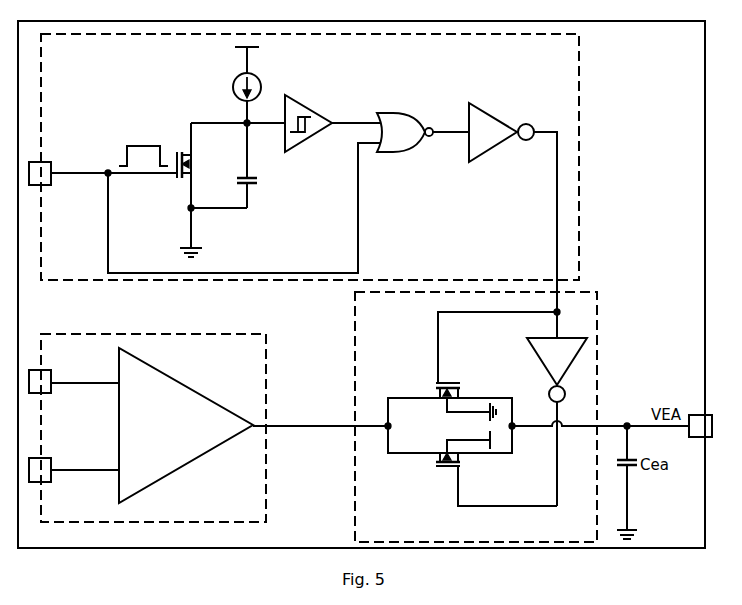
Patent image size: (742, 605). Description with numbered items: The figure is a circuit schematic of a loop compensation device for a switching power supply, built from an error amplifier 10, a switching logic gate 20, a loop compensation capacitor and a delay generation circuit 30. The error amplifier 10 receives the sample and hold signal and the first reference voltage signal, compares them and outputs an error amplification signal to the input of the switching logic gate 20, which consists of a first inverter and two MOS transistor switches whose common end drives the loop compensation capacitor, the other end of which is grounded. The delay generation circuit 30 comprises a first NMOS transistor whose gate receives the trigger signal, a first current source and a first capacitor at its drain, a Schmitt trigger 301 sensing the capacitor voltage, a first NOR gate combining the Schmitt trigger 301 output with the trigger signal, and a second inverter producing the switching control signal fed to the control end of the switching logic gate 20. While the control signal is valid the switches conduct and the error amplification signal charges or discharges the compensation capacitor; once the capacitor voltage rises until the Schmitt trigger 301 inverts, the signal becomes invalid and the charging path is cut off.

The delay generation circuit 30 is at (580, 146).
The error amplifier 10 is at (172, 333).
The switching logic gate 20 is at (598, 370).
The Schmitt trigger 301 is at (323, 115).